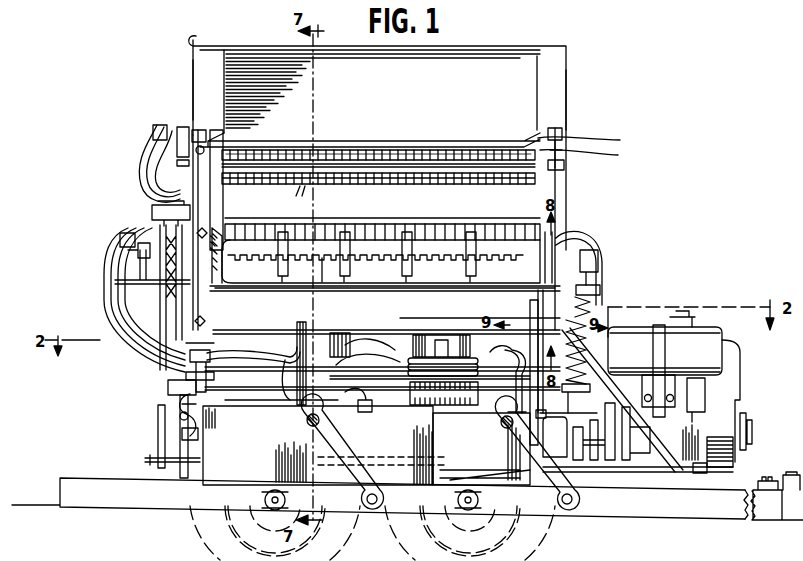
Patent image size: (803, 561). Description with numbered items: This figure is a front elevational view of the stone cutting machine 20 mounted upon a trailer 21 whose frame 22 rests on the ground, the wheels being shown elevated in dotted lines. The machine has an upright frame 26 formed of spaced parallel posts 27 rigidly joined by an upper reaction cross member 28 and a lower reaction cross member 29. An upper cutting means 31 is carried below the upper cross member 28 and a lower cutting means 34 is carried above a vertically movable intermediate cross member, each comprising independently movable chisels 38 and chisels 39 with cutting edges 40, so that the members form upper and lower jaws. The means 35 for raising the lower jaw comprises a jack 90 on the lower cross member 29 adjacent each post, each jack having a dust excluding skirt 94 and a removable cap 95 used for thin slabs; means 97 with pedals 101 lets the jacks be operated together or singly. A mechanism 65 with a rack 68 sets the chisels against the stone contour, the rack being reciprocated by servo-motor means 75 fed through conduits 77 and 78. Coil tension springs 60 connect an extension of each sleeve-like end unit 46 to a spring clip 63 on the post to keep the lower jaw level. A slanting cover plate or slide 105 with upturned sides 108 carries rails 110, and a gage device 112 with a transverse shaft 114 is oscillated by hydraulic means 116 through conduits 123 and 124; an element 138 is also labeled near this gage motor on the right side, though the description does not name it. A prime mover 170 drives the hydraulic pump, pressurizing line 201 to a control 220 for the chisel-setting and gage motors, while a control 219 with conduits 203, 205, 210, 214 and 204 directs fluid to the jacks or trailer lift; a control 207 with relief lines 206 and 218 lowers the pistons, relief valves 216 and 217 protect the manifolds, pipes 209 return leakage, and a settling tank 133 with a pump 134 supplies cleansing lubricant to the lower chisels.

The stone cutting machine 20 is at (566, 52).
The trailer 21 is at (60, 478).
The frame 22 is at (732, 517).
The upright frame 26 is at (208, 34).
The posts 27 is at (575, 105).
The upper reaction cross member 28 is at (527, 90).
The lower reaction cross member 29 is at (481, 449).
The cutting means 31 is at (448, 150).
The cutting means 34 is at (430, 234).
The means for actuating the intermediate cross member 35 is at (368, 342).
The chisels 38 is at (330, 186).
The chisels 39 is at (372, 226).
The cutting edges 40 is at (293, 222).
The sleeve-like end unit 46 is at (568, 240).
The coil tension springs 60 is at (597, 290).
The spring clip 63 is at (596, 390).
The mechanism 65 is at (562, 135).
The rack 68 is at (363, 141).
The means for reciprocating the rack 75 is at (578, 168).
The conduits 77 is at (141, 188).
The conduits 78 is at (168, 166).
The jack 90 is at (466, 326).
The dust excluding skirt 94 is at (372, 368).
The cap 95 is at (425, 326).
The means for selectively actuating the jacks 97 is at (140, 450).
The pedal 101 is at (148, 464).
The cover plate or slide 105 is at (450, 318).
The upturned sides 108 is at (524, 222).
The rails 110 is at (400, 280).
The gage device 112 is at (270, 256).
The transverse shaft 114 is at (325, 258).
The means for oscillating the shaft 116 is at (520, 330).
The conduit 123 is at (606, 303).
The conduit 124 is at (598, 274).
The settling tank 133 is at (226, 472).
The pump 134 is at (548, 470).
The valve 138 is at (600, 242).
The prime mover 170 is at (740, 362).
The line 201 is at (496, 366).
The outlet conduit 203 is at (140, 268).
The conduit 204 is at (230, 404).
The conduit 205 is at (268, 404).
The relief line 206 is at (250, 330).
The control 207 is at (172, 412).
The pipes 209 is at (366, 404).
The conduit 210 is at (130, 346).
The conduit 214 is at (186, 368).
The relief valve 216 is at (196, 205).
The relief valve 217 is at (150, 214).
The relief line 218 is at (198, 430).
The control 219 is at (125, 318).
The control 220 is at (138, 255).